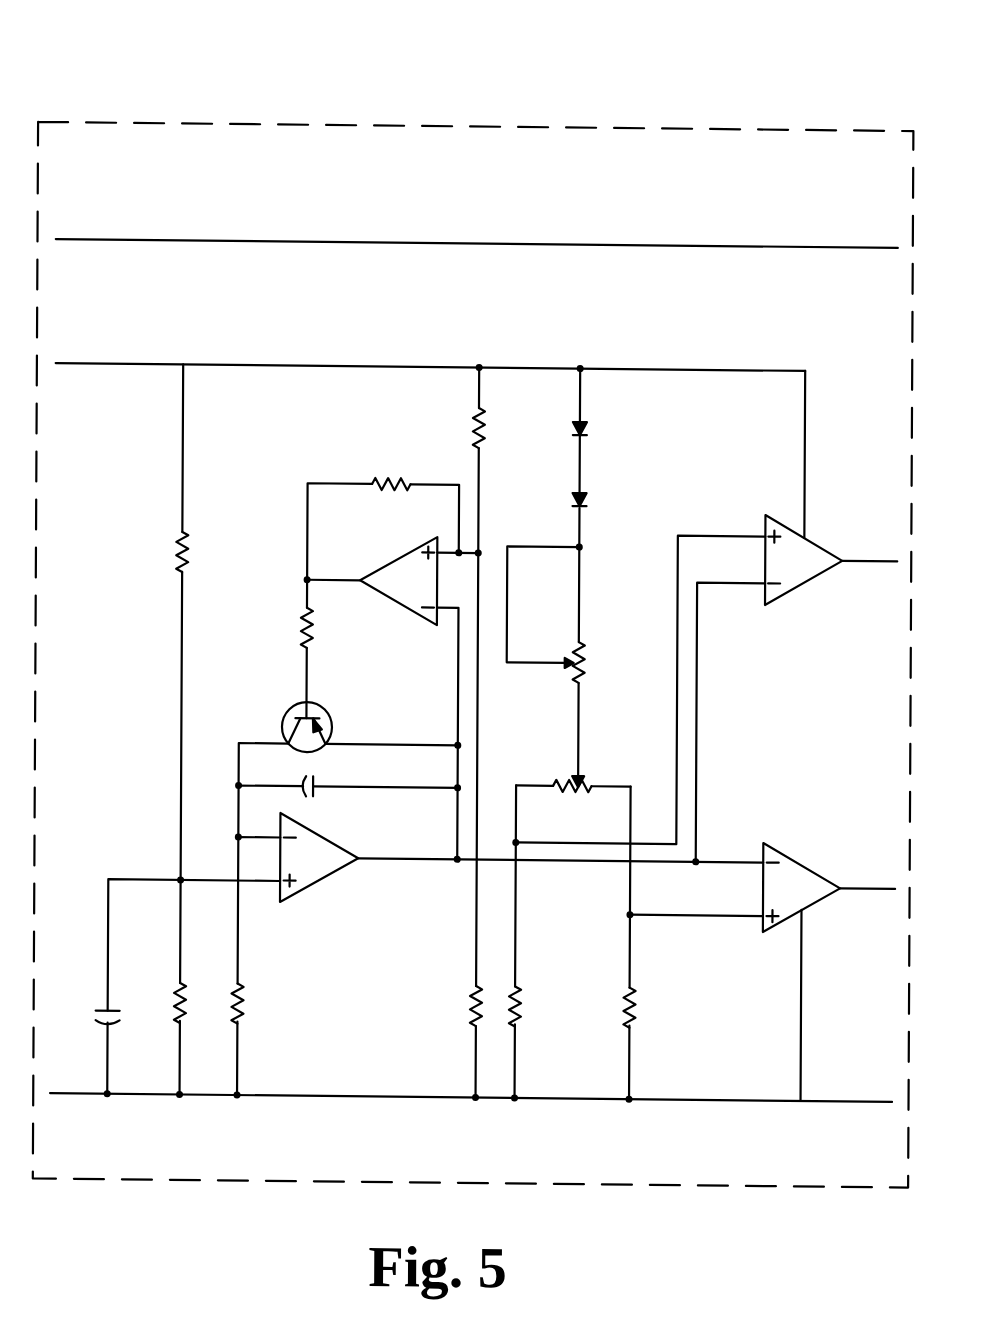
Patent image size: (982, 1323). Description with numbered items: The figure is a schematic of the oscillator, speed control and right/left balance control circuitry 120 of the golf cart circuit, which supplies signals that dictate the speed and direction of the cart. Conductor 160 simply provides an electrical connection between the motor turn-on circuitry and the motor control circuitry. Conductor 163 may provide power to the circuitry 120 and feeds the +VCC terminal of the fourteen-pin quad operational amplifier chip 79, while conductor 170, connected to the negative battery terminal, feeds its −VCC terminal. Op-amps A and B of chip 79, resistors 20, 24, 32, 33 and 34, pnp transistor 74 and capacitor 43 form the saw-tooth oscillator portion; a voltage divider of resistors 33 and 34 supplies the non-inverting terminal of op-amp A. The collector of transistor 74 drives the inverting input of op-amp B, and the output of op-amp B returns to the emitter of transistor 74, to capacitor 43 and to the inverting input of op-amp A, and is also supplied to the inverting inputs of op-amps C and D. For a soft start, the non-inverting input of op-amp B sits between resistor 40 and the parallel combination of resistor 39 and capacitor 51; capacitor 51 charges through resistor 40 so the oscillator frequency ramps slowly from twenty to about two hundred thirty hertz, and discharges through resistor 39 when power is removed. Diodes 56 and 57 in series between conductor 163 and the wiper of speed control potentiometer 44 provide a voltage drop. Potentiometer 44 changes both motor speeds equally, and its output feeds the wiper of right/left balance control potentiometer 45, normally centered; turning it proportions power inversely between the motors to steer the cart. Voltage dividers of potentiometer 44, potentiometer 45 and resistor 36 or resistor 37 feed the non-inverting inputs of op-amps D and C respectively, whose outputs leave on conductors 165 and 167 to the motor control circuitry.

The oscillator control circuitry 120 is at (205, 78).
The conductor 160 is at (316, 240).
The conductor 163 is at (77, 364).
The conductor 165 is at (883, 554).
The conductor 167 is at (884, 881).
The conductor 170 is at (68, 1094).
The resistor 20 is at (402, 486).
The resistor 24 is at (250, 1004).
The resistor 32 is at (300, 629).
The resistor 33 is at (487, 435).
The resistor 34 is at (477, 1007).
The resistor 36 is at (525, 1006).
The resistor 37 is at (640, 1005).
The resistor 39 is at (183, 1008).
The resistor 40 is at (191, 548).
The capacitor 43 is at (324, 775).
The speed control potentiometer 44 is at (586, 664).
The right/left balance control potentiometer 45 is at (576, 774).
The capacitor 51 is at (115, 1004).
The diode 56 is at (587, 419).
The diode 57 is at (588, 494).
The pnp transistor 74 is at (286, 700).
The quad operational amplifier chip 79 is at (375, 586).